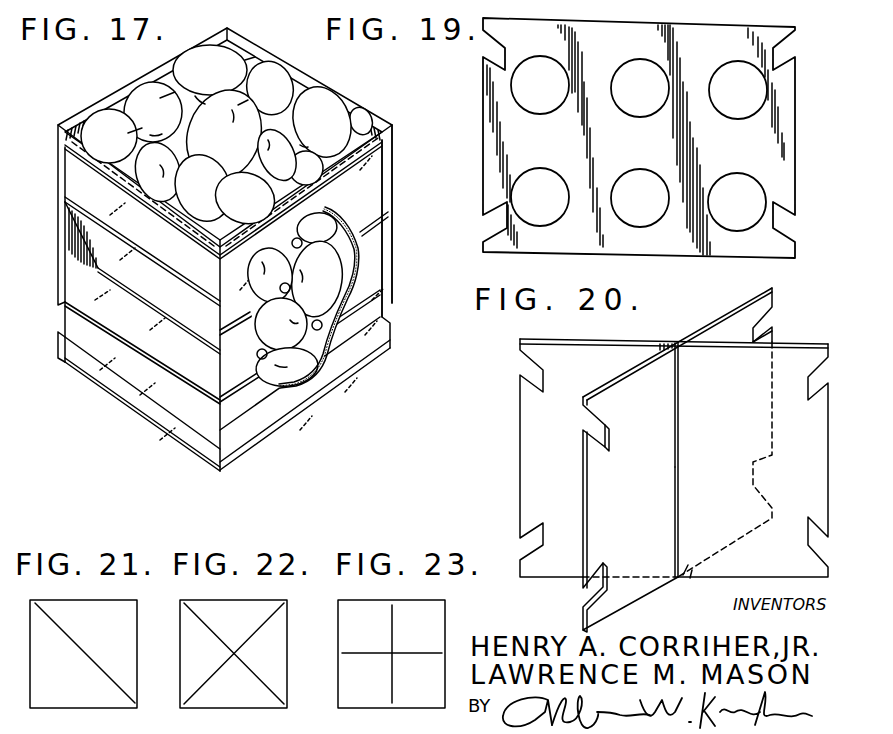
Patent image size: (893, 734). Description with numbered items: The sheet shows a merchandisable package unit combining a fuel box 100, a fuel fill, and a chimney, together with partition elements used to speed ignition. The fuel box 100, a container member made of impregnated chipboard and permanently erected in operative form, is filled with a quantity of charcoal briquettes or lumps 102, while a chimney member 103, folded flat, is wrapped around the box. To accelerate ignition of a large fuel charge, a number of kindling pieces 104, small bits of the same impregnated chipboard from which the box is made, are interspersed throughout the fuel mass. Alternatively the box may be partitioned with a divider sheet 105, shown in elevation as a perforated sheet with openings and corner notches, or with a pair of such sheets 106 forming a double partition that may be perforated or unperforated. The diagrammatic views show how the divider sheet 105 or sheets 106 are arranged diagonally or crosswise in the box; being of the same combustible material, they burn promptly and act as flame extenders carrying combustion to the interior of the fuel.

In FIG. 17, the fuel box 100 is at (380, 116).
In FIG. 17, the charcoal briquettes or lumps 102 is at (223, 50).
In FIG. 17, the chimney member 103 is at (367, 177).
In FIG. 17, the kindling pieces 104 is at (283, 100).
In FIG. 19, the divider sheet 105 is at (707, 34).
In FIG. 21, the divider sheet 105 is at (77, 648).
In FIG. 20, the pair of divider sheets 106 is at (637, 363).
In FIG. 22, the pair of divider sheets 106 is at (240, 668).
In FIG. 23, the pair of divider sheets 106 is at (378, 655).